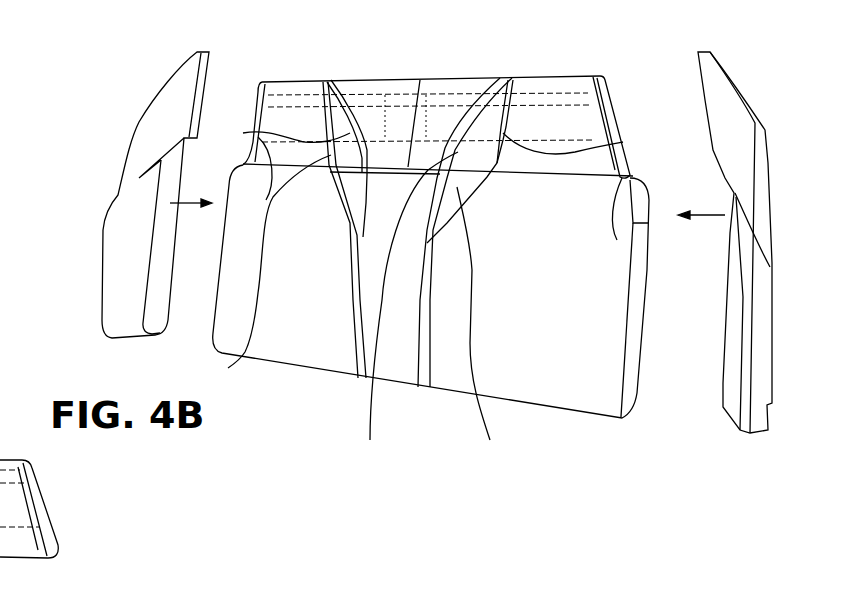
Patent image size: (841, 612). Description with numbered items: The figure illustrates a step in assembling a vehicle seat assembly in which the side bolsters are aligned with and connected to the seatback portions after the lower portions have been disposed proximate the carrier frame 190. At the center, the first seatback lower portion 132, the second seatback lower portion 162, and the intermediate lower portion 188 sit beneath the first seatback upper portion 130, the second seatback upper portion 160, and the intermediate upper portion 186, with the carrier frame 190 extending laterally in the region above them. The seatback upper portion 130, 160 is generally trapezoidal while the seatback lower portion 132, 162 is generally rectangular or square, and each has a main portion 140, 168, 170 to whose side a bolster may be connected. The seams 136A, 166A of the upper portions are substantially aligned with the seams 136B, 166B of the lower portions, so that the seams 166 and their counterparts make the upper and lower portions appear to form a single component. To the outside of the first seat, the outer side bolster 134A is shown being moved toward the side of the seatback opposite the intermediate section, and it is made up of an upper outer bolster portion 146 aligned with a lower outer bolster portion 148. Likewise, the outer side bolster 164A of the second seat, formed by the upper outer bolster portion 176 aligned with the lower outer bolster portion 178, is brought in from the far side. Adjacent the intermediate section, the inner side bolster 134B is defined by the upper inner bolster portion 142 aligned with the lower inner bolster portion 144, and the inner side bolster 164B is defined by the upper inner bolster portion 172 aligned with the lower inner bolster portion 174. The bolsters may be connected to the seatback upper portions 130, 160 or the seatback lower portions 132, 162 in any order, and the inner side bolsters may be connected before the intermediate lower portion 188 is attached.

The seatback upper portion 130 is at (248, 104).
The seatback lower portion 132 is at (315, 385).
The outer side bolster 134A is at (94, 176).
The inner side bolster 134B is at (367, 110).
The seam 136A is at (357, 183).
The seam 136B is at (350, 263).
The main portion 140 is at (295, 323).
The upper inner bolster portion 142 is at (278, 165).
The lower inner bolster portion 144 is at (228, 368).
The upper outer bolster portion 146 is at (149, 125).
The lower outer bolster portion 148 is at (125, 255).
The seatback upper portion 160 is at (624, 119).
The seatback lower portion 162 is at (549, 418).
The outer side bolster 164A is at (777, 106).
The inner side bolster 164B is at (466, 103).
The seams 166 is at (538, 120).
The seam 166A is at (598, 130).
The seam 166B is at (617, 205).
The main portion 168 is at (2, 574).
The main portion 170 is at (590, 388).
The upper inner bolster portion 172 is at (404, 311).
The lower inner bolster portion 174 is at (487, 329).
The upper outer bolster portion 176 is at (762, 197).
The lower outer bolster portion 178 is at (758, 347).
The intermediate upper portion 186 is at (354, 92).
The intermediate lower portion 188 is at (400, 360).
The carrier frame 190 is at (444, 95).